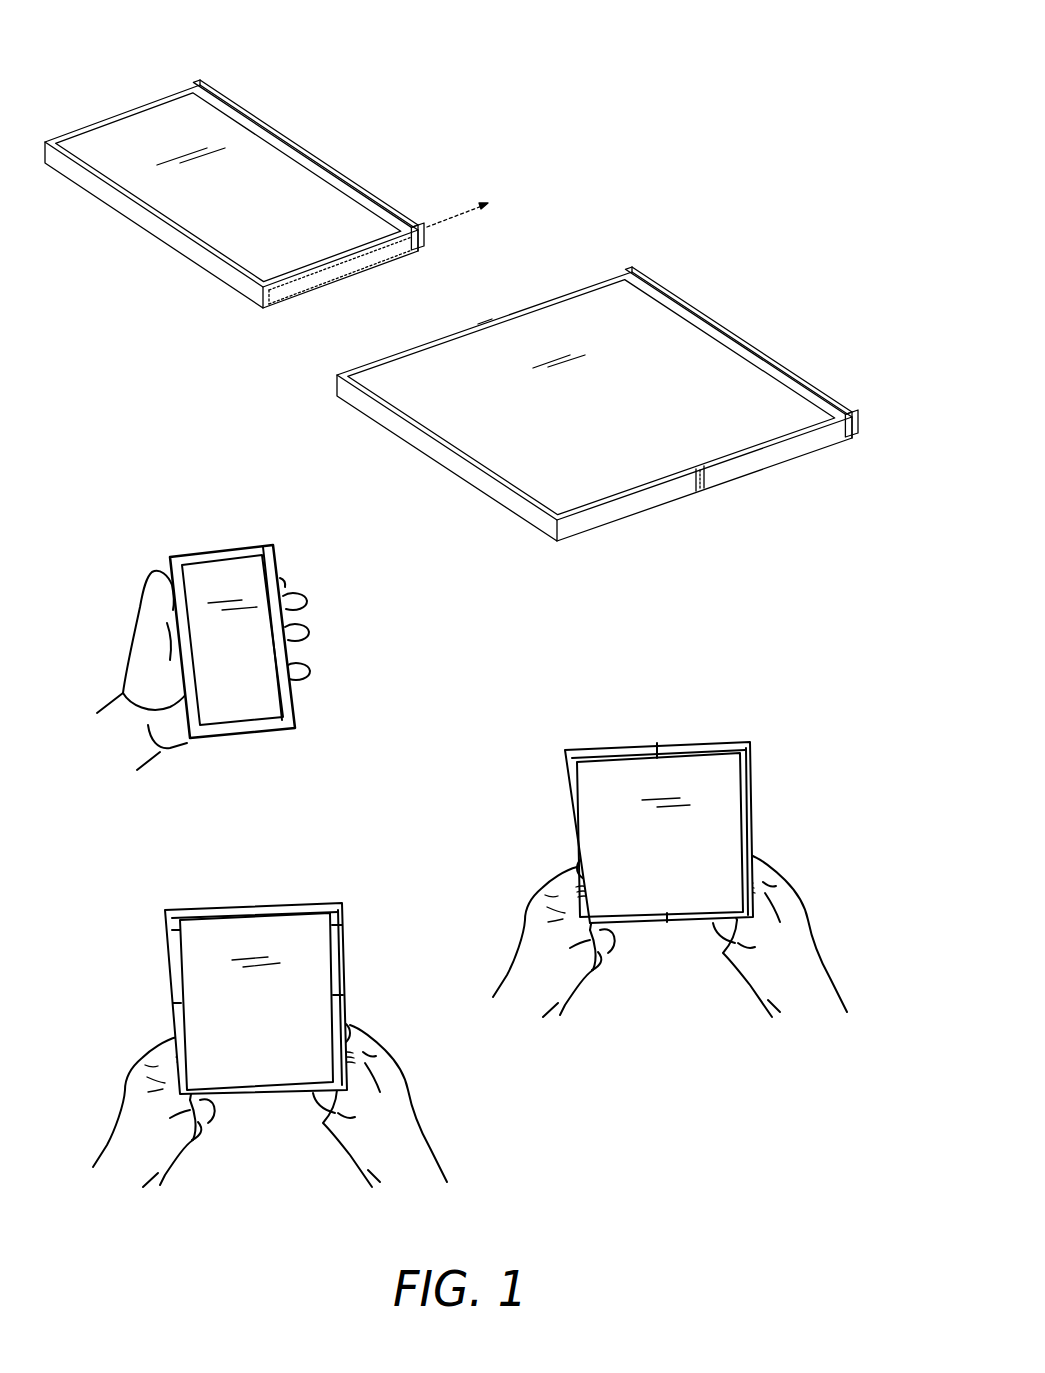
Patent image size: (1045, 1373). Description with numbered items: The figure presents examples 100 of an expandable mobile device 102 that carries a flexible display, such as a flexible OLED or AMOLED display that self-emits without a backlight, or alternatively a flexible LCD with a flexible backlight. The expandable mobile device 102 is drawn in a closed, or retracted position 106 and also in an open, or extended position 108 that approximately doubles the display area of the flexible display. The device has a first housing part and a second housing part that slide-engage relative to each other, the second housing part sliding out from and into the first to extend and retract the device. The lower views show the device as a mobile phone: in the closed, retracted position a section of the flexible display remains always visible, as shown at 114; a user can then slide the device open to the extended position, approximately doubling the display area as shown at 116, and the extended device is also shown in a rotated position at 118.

The examples 100 is at (712, 72).
The expandable mobile device 102 is at (130, 85).
The closed, or retracted position 106 is at (288, 98).
The open, or extended position 108 is at (683, 268).
The mobile phone device in closed, retracted position 114 is at (192, 528).
The extended position with doubled display area 116 is at (285, 872).
The rotated position 118 is at (700, 705).